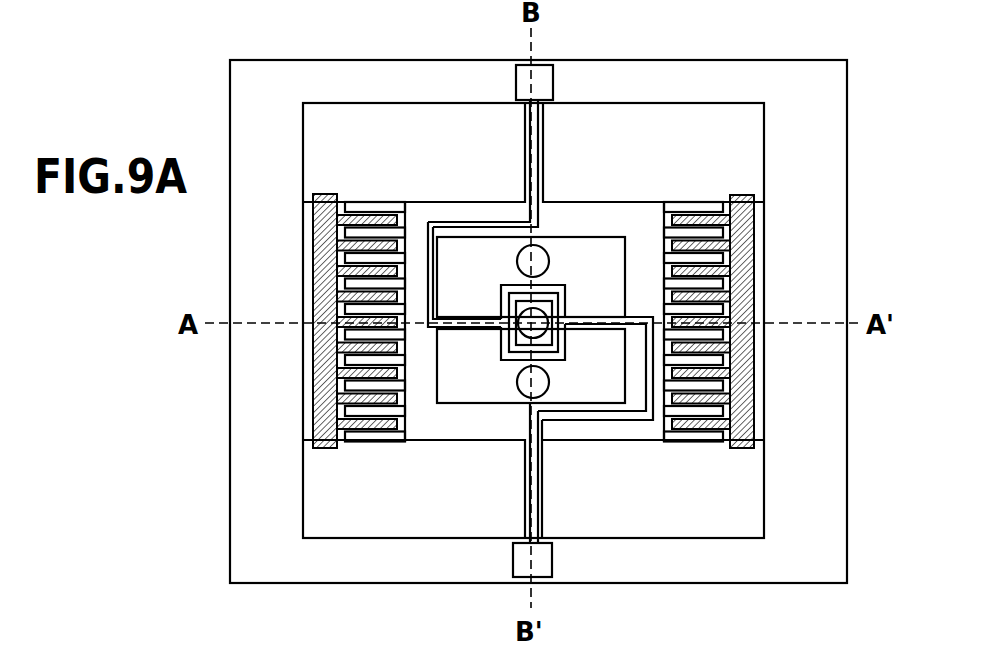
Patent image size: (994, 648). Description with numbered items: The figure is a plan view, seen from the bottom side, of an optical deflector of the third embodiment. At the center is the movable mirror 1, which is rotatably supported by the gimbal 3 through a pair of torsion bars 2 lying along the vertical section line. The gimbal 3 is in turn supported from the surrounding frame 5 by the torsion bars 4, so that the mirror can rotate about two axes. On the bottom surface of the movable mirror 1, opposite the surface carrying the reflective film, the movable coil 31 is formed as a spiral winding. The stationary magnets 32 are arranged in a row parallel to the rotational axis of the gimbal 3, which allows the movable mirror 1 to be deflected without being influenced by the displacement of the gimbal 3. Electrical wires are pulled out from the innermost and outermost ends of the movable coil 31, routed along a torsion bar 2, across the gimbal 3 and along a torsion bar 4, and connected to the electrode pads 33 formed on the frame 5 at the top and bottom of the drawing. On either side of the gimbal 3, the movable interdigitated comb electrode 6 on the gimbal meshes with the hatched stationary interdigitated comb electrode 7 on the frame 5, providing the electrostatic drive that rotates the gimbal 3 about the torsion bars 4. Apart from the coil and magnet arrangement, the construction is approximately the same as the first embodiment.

The movable mirror 1 is at (558, 287).
The torsion bar 2 is at (473, 330).
The gimbal 3 is at (553, 210).
The movable coil 31 is at (507, 290).
The stationary magnet 32 is at (538, 388).
The electrode pad 33 is at (553, 66).
The torsion bar 4 is at (520, 163).
The frame 5 is at (725, 570).
The movable interdigitated comb electrode 6 is at (678, 202).
The stationary interdigitated comb electrode 7 is at (745, 290).